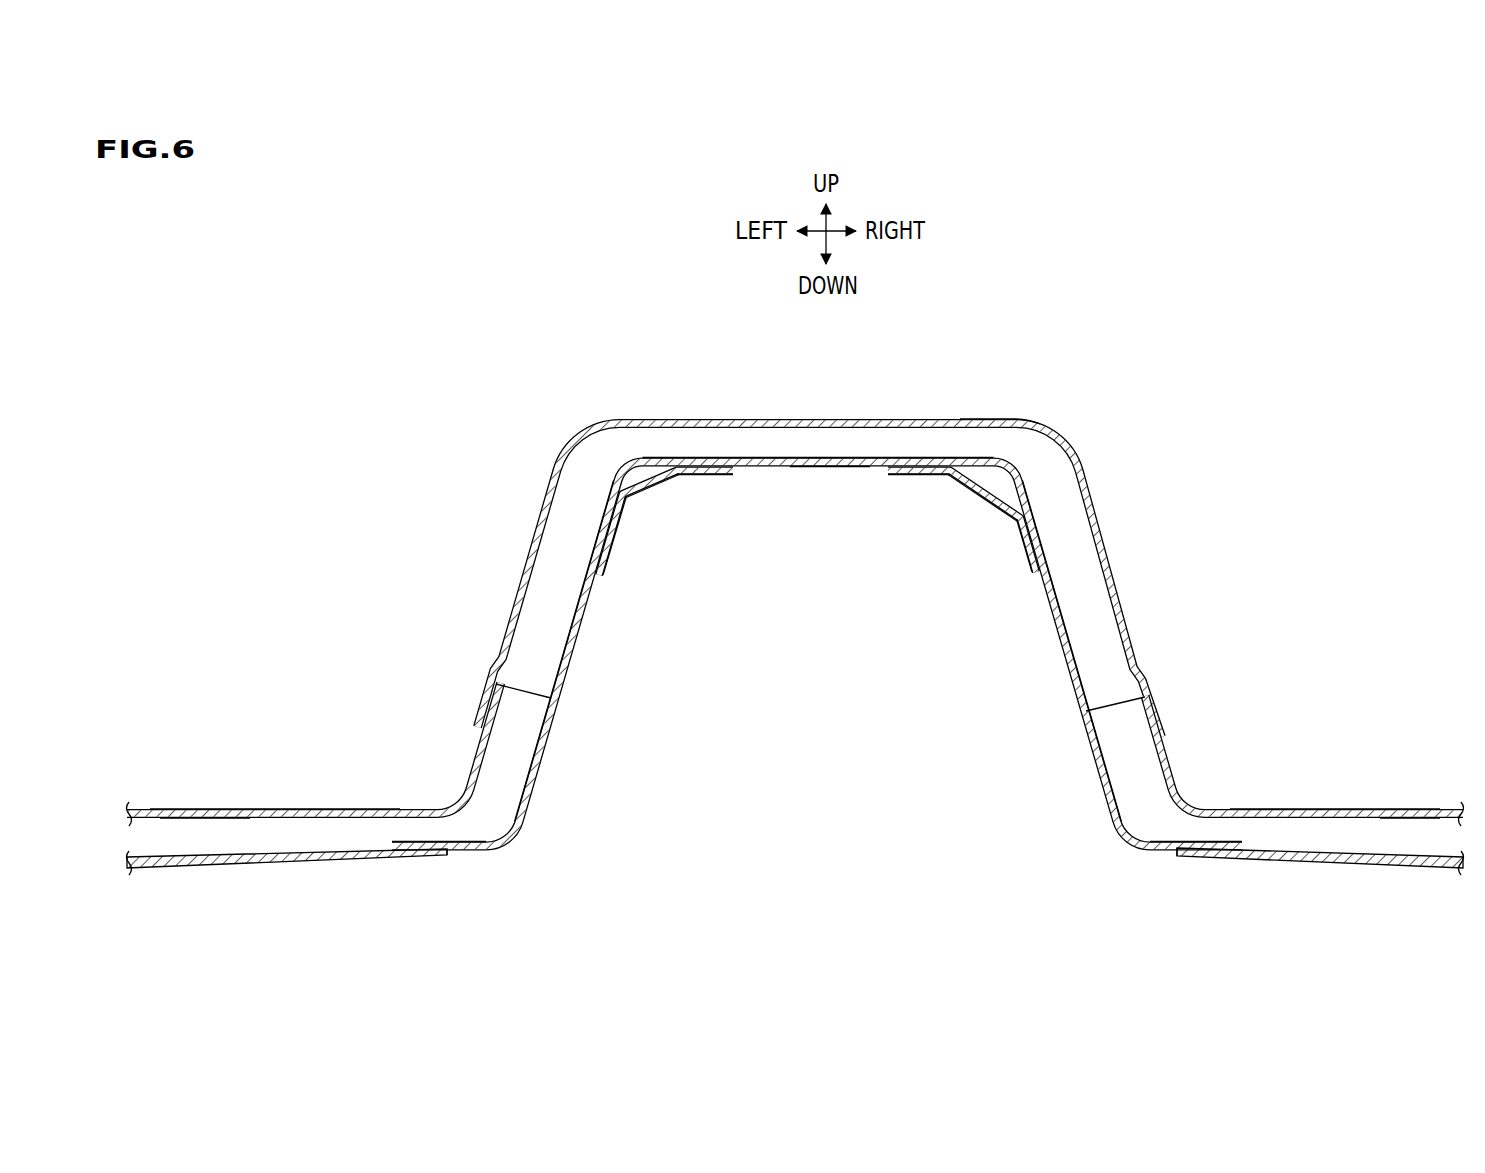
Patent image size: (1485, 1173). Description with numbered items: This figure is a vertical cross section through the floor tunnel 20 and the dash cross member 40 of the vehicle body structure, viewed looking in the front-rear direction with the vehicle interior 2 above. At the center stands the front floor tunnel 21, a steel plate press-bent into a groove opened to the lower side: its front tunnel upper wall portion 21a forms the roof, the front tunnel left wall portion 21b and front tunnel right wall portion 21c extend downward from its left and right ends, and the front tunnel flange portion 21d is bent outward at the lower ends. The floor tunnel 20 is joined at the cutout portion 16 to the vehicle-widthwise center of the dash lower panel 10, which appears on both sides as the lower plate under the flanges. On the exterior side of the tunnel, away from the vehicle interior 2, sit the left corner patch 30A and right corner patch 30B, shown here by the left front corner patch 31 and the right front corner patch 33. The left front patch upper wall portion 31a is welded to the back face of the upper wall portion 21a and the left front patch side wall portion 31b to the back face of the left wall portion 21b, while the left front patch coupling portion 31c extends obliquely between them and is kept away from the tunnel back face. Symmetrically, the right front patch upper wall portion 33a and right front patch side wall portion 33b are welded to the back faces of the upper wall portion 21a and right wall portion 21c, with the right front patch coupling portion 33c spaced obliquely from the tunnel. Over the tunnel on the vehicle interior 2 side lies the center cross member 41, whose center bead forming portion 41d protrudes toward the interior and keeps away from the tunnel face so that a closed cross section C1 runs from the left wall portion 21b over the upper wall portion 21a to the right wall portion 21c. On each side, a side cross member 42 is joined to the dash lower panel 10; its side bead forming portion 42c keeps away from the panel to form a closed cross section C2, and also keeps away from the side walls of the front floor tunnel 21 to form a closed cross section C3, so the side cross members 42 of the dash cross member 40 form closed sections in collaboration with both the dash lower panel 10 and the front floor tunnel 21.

The vehicle interior 2 is at (835, 377).
The dash lower panel 10 is at (348, 860).
The cutout portion 16 is at (452, 857).
The floor tunnel 20 is at (814, 636).
The front floor tunnel 21 is at (850, 470).
The front tunnel upper wall portion 21a is at (797, 468).
The front tunnel left wall portion 21b is at (578, 640).
The front tunnel right wall portion 21c is at (1059, 640).
The front tunnel flange portion 21d is at (410, 841).
The left corner patch 30A is at (656, 480).
The right corner patch 30B is at (1013, 500).
The left front corner patch 31 is at (643, 465).
The left front patch upper wall portion 31a is at (715, 476).
The left front patch side wall portion 31b is at (607, 560).
The left front patch coupling portion 31c is at (650, 490).
The right front corner patch 33 is at (990, 494).
The right front patch upper wall portion 33a is at (888, 476).
The right front patch side wall portion 33b is at (1028, 558).
The right front patch coupling portion 33c is at (972, 488).
The dash cross member 40 is at (795, 583).
The center cross member 41 is at (908, 412).
The center bead forming portion 41d is at (1000, 419).
The side cross member 42 is at (318, 805).
The side bead forming portion 42c is at (222, 808).
The closed cross section C1 is at (845, 453).
The closed cross section C2 is at (200, 848).
The closed cross section C3 is at (531, 753).